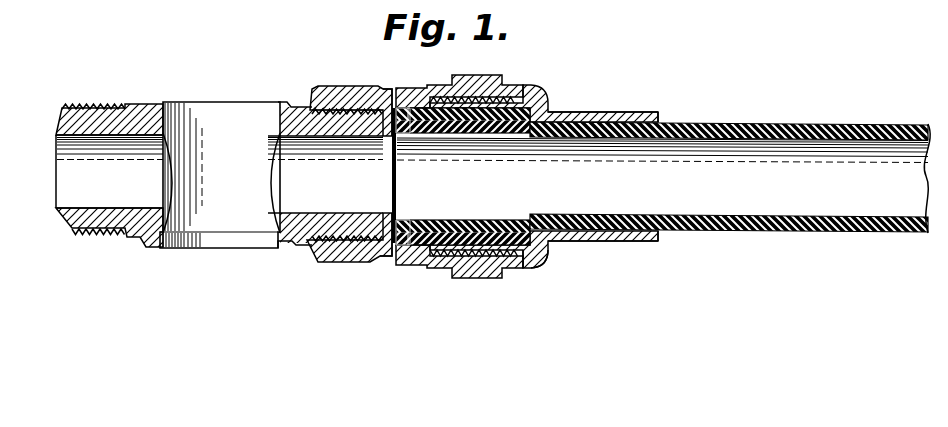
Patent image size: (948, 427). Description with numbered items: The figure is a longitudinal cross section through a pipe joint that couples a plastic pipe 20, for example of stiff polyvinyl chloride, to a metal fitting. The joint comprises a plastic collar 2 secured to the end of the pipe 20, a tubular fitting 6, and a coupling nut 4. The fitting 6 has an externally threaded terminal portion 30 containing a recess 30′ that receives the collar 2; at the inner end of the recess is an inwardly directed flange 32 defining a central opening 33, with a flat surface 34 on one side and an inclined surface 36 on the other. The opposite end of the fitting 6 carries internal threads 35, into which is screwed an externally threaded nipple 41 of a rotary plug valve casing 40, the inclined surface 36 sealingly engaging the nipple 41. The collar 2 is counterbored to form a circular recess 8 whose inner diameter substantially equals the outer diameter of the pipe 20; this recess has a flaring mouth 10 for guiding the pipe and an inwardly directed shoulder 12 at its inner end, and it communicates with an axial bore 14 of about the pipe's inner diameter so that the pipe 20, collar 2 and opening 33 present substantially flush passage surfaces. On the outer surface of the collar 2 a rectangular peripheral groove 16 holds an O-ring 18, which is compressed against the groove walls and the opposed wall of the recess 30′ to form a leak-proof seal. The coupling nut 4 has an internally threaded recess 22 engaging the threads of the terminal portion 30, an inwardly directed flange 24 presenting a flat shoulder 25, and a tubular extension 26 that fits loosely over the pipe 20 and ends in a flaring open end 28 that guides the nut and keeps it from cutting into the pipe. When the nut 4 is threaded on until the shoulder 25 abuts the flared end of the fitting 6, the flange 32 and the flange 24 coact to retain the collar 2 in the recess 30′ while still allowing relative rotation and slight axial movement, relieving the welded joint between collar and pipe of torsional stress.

The collar 2 is at (455, 248).
The coupling nut 4 is at (543, 97).
The tubular fitting 6 is at (360, 263).
The circular recess 8 is at (479, 124).
The flaring mouth 10 is at (523, 243).
The inwardly directed shoulder 12 is at (431, 214).
The axial bore 14 is at (409, 226).
The peripheral groove 16 is at (423, 120).
The O-ring 18 is at (407, 113).
The plastic pipe 20 is at (744, 125).
The internally threaded recess 22 is at (478, 97).
The inwardly directed flange 24 is at (545, 246).
The shoulder 25 is at (525, 246).
The tubular extension 26 is at (605, 113).
The flaring open end 28 is at (662, 121).
The terminal portion 30 is at (478, 250).
The recess 30′ is at (463, 110).
The inwardly directed flange 32 is at (389, 128).
The central opening 33 is at (390, 212).
The flat surface 34 is at (411, 119).
The internal threads 35 is at (363, 110).
The inclined surface 36 is at (383, 238).
The rotary plug valve casing 40 is at (136, 250).
The externally threaded nipple 41 is at (103, 130).